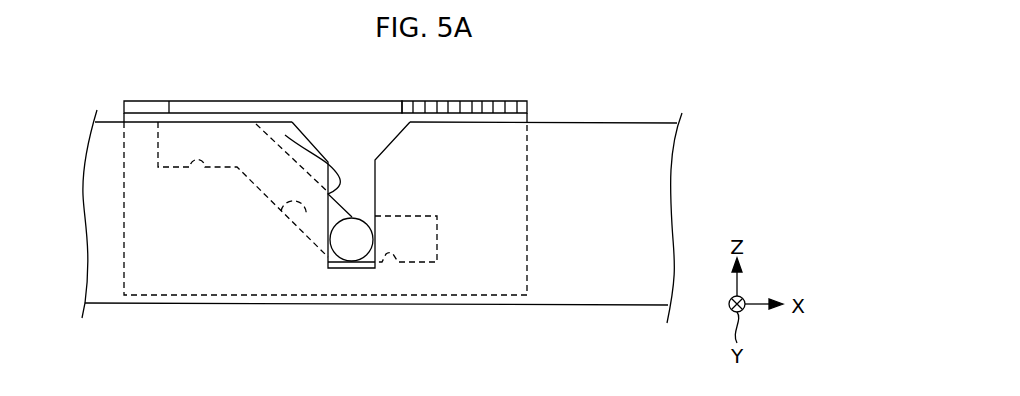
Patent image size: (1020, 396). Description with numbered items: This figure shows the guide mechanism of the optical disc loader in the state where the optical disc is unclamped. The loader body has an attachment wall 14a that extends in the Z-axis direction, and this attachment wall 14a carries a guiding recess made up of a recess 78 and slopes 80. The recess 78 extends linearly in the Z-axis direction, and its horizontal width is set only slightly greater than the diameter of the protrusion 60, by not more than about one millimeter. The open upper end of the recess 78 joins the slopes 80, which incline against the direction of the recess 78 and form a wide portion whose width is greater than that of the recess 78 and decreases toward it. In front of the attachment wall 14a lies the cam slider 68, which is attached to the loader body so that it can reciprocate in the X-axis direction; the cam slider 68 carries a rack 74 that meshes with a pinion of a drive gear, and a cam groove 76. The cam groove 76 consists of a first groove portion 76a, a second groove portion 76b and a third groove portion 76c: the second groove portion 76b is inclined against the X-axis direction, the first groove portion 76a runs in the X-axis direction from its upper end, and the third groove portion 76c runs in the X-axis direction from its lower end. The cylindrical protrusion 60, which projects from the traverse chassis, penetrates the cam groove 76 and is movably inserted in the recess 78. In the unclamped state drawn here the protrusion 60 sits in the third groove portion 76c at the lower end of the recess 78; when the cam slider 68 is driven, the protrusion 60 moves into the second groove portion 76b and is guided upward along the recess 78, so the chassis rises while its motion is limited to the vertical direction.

The attachment wall 14a is at (650, 209).
The protrusion 60 is at (350, 238).
The cam slider 68 is at (375, 105).
The rack 74 is at (452, 103).
The cam groove 76 is at (321, 255).
The first groove portion 76a is at (205, 167).
The second groove portion 76b is at (306, 216).
The third groove portion 76c is at (381, 262).
The recess 78 is at (285, 135).
The slopes 80 is at (314, 140).